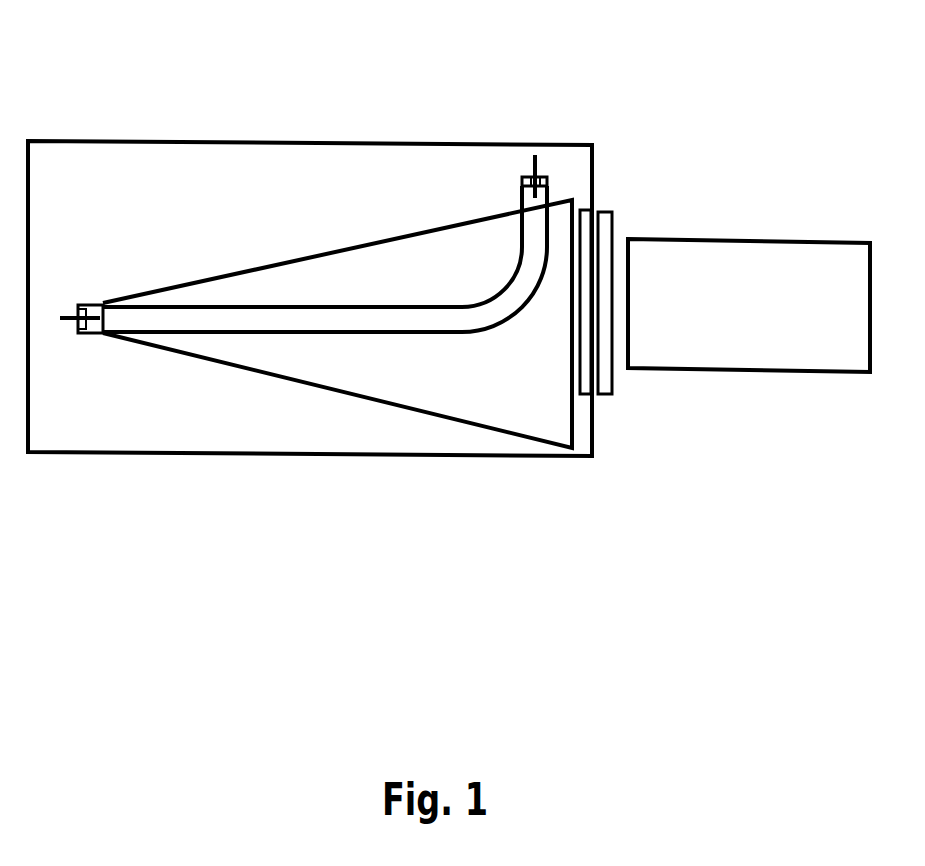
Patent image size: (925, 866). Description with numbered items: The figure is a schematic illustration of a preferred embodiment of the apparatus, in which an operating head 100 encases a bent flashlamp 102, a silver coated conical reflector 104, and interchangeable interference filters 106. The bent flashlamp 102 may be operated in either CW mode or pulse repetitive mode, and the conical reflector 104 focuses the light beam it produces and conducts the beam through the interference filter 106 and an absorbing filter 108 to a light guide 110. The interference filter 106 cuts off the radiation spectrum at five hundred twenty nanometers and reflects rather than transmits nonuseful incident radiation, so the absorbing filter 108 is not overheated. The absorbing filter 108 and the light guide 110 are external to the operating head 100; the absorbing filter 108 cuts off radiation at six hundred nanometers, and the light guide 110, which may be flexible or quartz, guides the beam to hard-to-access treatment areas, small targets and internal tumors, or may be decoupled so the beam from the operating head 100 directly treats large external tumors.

The operating head 100 is at (182, 138).
The bent flashlamp 102 is at (283, 318).
The silver coated conical reflector 104 is at (410, 235).
The interchangeable interference filter 106 is at (593, 205).
The absorbing filter 108 is at (613, 235).
The light guide 110 is at (689, 272).